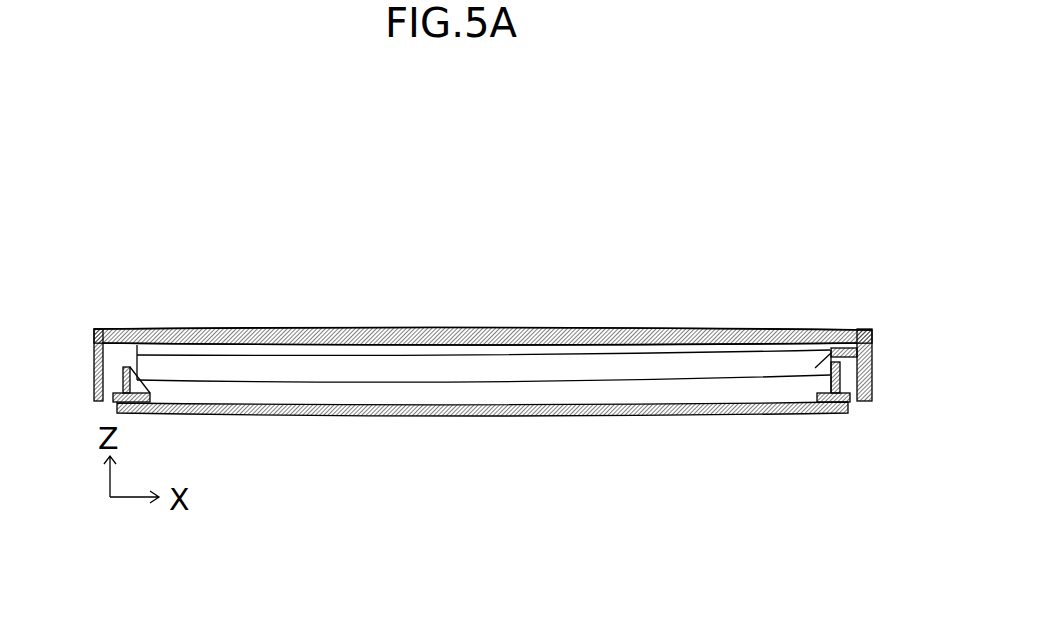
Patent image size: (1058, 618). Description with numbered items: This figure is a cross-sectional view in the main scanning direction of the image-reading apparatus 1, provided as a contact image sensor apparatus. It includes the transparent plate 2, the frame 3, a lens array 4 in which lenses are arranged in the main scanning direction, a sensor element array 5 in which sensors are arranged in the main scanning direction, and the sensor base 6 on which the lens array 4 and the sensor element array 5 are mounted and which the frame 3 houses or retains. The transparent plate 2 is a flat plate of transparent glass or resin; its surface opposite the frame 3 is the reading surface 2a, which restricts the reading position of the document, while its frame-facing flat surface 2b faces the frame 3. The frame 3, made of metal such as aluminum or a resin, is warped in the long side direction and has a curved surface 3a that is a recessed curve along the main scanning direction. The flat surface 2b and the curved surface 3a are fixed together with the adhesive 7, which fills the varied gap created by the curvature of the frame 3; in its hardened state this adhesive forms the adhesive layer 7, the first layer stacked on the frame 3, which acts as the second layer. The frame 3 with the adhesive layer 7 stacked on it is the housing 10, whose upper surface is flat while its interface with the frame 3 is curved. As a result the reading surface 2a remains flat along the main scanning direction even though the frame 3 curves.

The image-reading apparatus 1 is at (509, 344).
The transparent plate 2 is at (188, 328).
The reading surface 2a is at (350, 328).
The flat surface 2b is at (638, 328).
The frame 3 is at (517, 314).
The curved surface 3a is at (462, 344).
The lens array 4 is at (877, 367).
The sensor element array 5 is at (125, 387).
The sensor base 6 is at (603, 415).
The adhesive layer 7 is at (748, 343).
The housing 10 is at (902, 247).